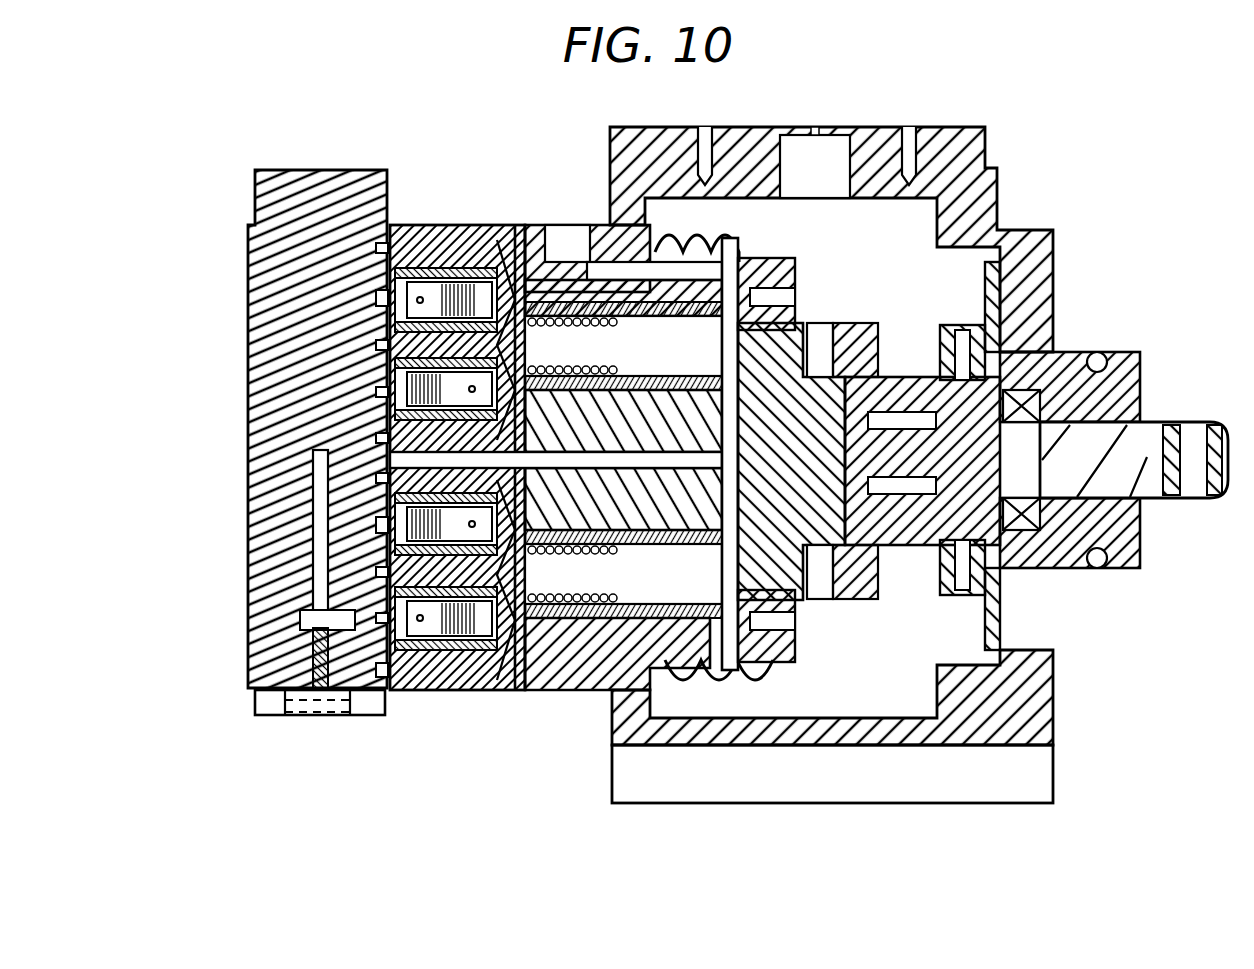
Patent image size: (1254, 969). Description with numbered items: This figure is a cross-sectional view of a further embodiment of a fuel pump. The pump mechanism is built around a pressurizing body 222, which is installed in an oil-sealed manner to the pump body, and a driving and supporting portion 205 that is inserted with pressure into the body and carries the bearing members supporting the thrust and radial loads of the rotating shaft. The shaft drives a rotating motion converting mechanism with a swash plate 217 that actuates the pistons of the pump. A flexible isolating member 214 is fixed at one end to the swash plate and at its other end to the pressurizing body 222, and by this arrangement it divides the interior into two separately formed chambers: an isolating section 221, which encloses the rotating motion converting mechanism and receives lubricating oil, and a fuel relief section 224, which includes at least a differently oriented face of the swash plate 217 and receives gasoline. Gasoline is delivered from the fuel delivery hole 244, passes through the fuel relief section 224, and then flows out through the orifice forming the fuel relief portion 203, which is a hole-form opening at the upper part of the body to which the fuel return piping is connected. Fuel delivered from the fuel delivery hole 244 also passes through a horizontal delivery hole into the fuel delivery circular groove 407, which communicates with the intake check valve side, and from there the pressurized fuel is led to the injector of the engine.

The fuel relief portion 203 is at (567, 242).
The driving and supporting portion 205 is at (1150, 370).
The flexible isolating member 214 is at (745, 240).
The swash plate 217 is at (800, 320).
The isolating section 221 is at (955, 230).
The pressurizing body 222 is at (580, 662).
The fuel relief section 224 is at (733, 653).
The fuel delivery hole 244 is at (355, 458).
The fuel delivery circular groove 407 is at (385, 293).